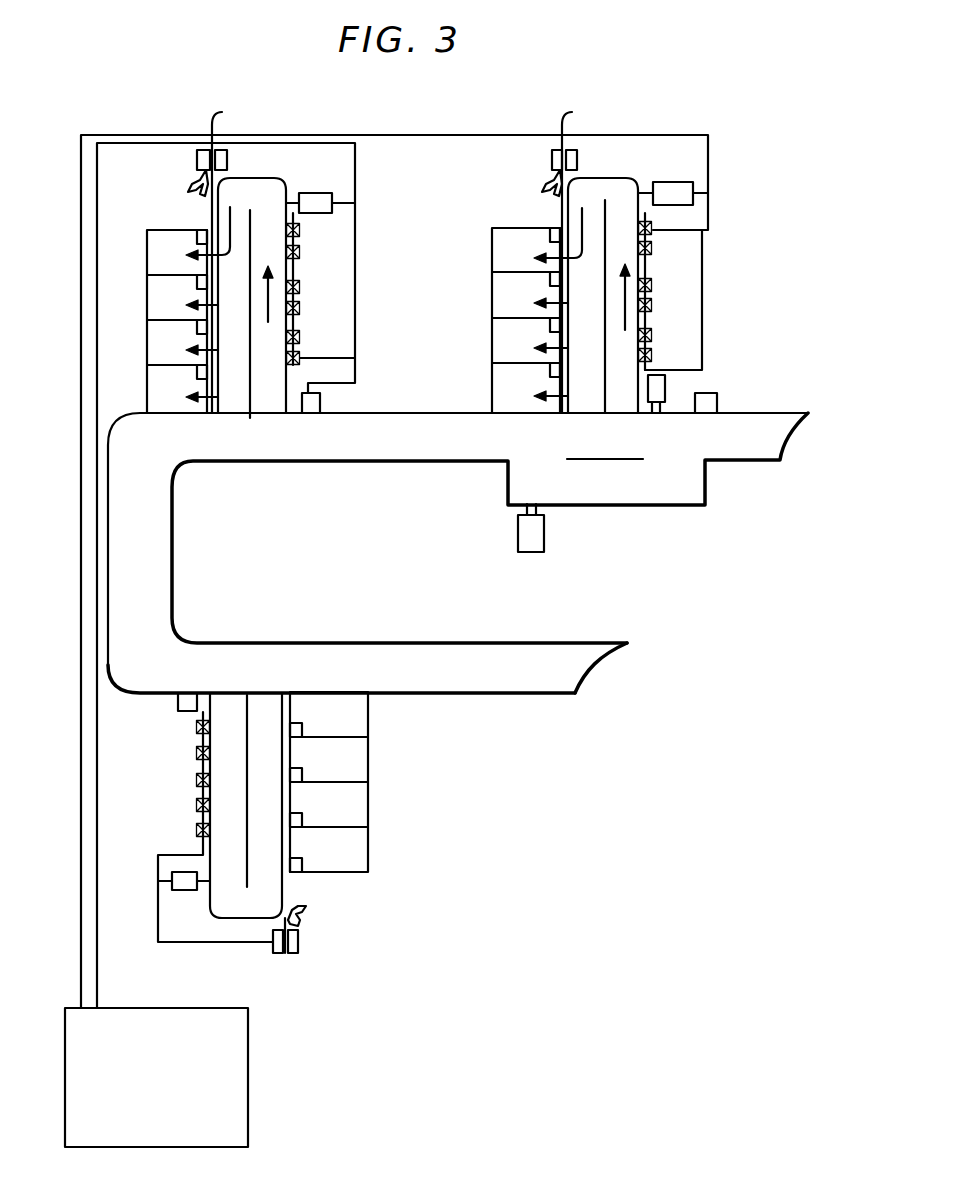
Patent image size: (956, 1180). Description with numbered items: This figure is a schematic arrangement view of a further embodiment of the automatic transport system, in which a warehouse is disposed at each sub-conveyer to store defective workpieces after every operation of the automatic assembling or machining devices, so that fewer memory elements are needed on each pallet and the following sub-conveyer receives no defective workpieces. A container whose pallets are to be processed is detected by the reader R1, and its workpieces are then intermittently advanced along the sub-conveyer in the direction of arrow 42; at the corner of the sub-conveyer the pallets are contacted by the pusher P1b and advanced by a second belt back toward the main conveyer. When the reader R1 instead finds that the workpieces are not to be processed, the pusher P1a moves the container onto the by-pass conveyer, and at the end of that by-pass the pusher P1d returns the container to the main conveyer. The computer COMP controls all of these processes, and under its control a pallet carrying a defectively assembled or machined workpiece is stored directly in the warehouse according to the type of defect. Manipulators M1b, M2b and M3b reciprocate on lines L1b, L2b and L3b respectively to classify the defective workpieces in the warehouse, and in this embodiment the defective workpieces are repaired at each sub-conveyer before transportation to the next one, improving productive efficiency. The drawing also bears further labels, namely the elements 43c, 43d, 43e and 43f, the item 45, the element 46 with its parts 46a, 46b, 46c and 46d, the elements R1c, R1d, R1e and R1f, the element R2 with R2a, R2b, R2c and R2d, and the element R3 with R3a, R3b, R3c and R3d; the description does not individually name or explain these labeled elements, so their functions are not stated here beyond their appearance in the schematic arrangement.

The arrow 42 is at (603, 295).
The receiver compartment 43c is at (539, 238).
The receiver compartment 43d is at (532, 304).
The receiver compartment 43e is at (532, 349).
The receiver compartment 43f is at (532, 396).
The flow direction 45 is at (266, 310).
The second column 46 is at (252, 298).
The receiver compartment 46a is at (191, 238).
The receiver compartment 46b is at (185, 305).
The receiver compartment 46c is at (185, 350).
The receiver compartment 46d is at (185, 397).
The line L1b is at (560, 254).
The line L2b is at (228, 255).
The line L3b is at (306, 914).
The manipulator M1b is at (552, 158).
The manipulator M2b is at (197, 158).
The manipulator M3b is at (298, 942).
The pusher P1a is at (665, 385).
The pusher P1b is at (685, 197).
The pusher P1d is at (544, 536).
The reader R1 is at (717, 398).
The sensor R1c is at (553, 228).
The sensor R1d is at (553, 282).
The sensor R1e is at (553, 328).
The sensor R1f is at (553, 370).
The sensor R2 is at (320, 402).
The sensor R2a is at (200, 230).
The sensor R2b is at (200, 283).
The sensor R2c is at (200, 328).
The sensor R2d is at (200, 373).
The sensor R3 is at (188, 711).
The sensor R3a is at (314, 843).
The sensor R3b is at (314, 798).
The sensor R3c is at (314, 753).
The sensor R3d is at (314, 708).
The computer COMP is at (156, 1077).